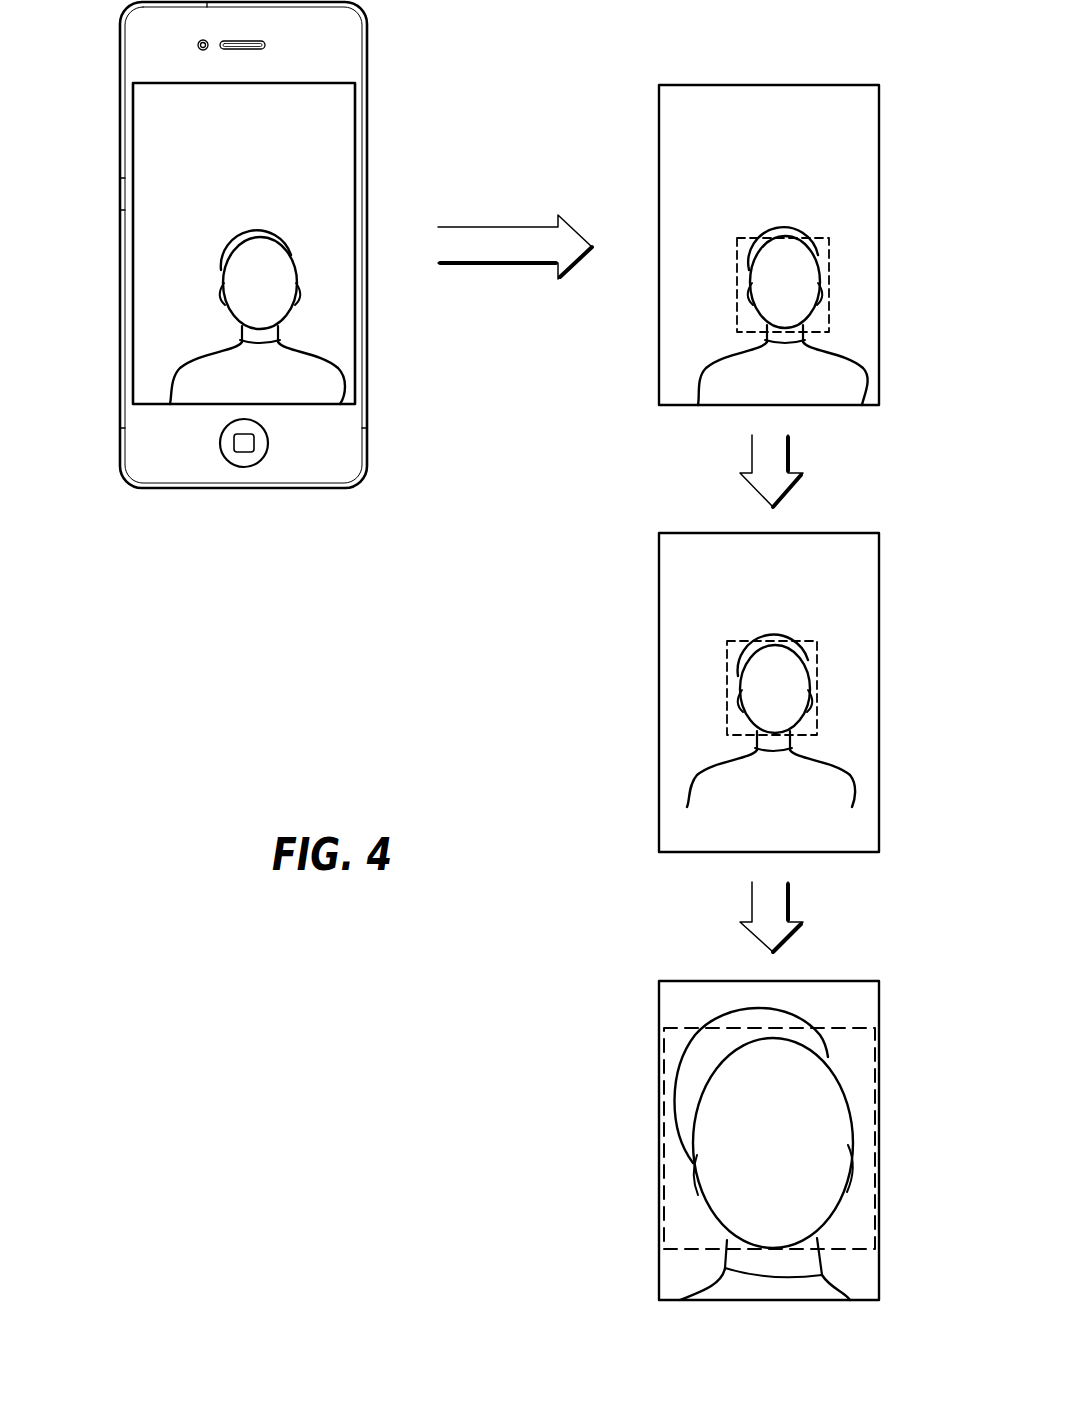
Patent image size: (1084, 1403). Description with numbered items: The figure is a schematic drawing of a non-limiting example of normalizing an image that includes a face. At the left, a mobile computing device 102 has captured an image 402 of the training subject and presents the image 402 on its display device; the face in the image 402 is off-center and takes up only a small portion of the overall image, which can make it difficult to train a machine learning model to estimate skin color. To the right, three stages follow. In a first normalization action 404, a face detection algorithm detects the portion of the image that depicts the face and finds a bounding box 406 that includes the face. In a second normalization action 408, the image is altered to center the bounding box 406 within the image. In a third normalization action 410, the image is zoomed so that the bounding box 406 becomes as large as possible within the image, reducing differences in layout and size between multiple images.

The mobile computing device 102 is at (366, 466).
The image 402 is at (311, 190).
The first normalization action 404 is at (659, 358).
The bounding box 406 is at (740, 238).
The second normalization action 408 is at (659, 752).
The third normalization action 410 is at (659, 1000).